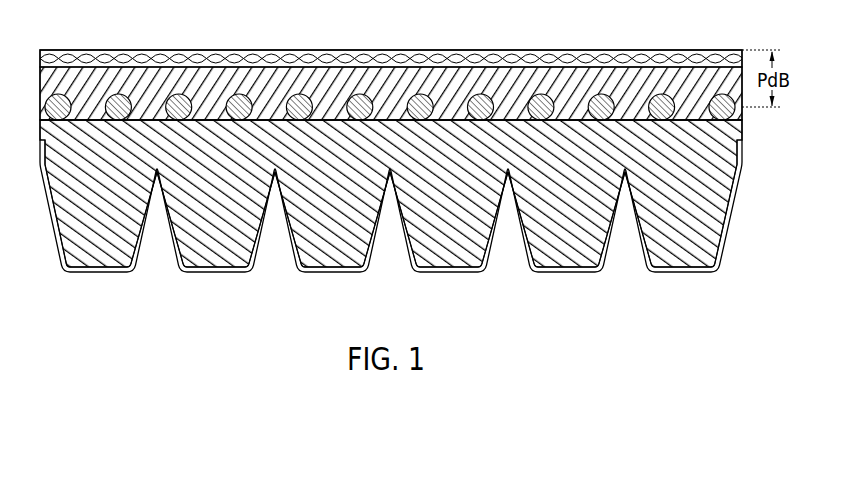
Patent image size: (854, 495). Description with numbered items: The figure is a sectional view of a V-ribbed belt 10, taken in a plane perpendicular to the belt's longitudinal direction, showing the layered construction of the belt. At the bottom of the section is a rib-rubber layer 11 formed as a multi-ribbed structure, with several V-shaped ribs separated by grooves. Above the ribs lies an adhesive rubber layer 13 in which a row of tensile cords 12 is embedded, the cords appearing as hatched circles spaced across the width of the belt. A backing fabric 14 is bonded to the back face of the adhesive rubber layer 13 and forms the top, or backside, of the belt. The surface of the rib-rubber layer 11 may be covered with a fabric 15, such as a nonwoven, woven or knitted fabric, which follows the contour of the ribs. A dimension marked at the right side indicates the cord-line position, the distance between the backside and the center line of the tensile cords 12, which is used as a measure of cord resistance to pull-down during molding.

The V-ribbed belt 10 is at (183, 322).
The rib-rubber layer 11 is at (87, 220).
The tensile cords 12 is at (297, 95).
The adhesive rubber layer 13 is at (545, 66).
The backing fabric 14 is at (342, 52).
The fabric 15 is at (430, 271).